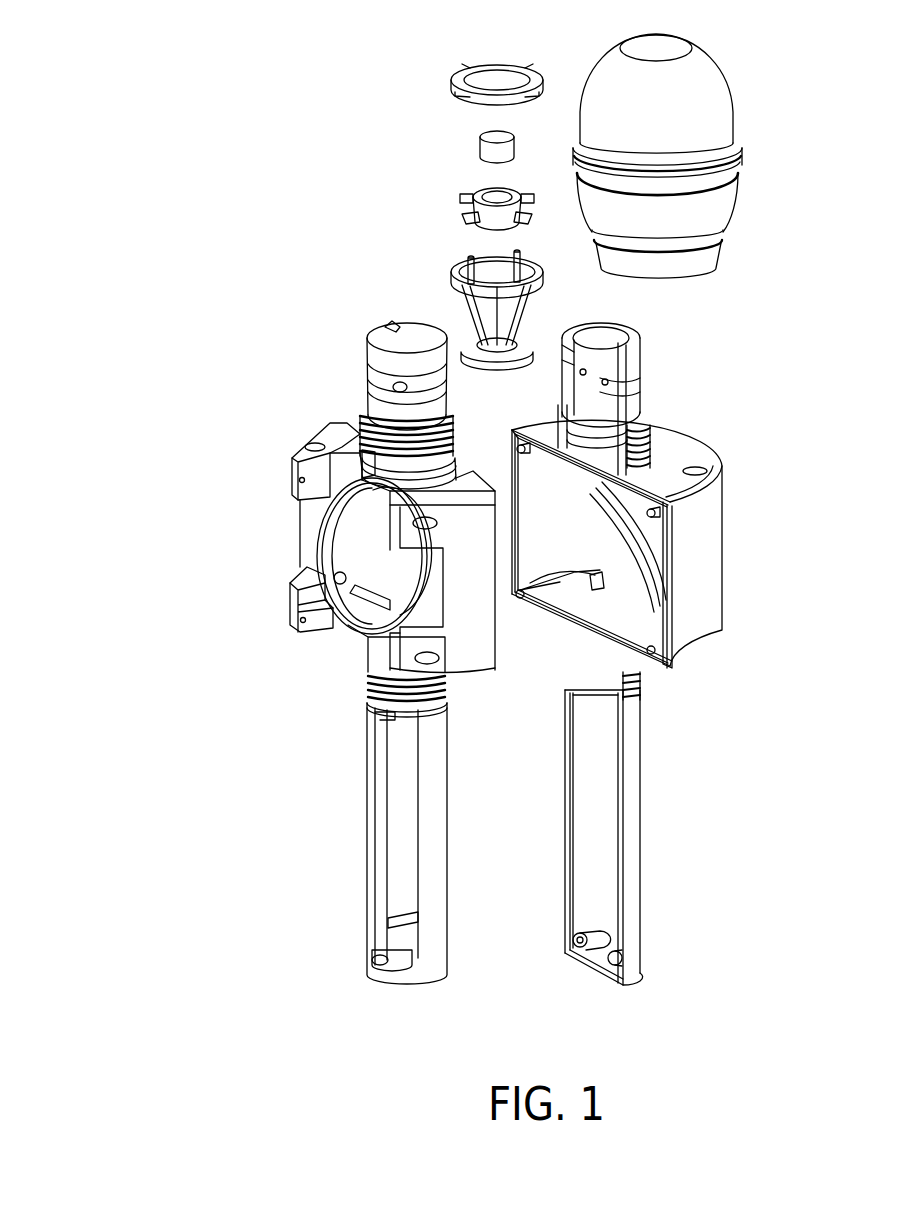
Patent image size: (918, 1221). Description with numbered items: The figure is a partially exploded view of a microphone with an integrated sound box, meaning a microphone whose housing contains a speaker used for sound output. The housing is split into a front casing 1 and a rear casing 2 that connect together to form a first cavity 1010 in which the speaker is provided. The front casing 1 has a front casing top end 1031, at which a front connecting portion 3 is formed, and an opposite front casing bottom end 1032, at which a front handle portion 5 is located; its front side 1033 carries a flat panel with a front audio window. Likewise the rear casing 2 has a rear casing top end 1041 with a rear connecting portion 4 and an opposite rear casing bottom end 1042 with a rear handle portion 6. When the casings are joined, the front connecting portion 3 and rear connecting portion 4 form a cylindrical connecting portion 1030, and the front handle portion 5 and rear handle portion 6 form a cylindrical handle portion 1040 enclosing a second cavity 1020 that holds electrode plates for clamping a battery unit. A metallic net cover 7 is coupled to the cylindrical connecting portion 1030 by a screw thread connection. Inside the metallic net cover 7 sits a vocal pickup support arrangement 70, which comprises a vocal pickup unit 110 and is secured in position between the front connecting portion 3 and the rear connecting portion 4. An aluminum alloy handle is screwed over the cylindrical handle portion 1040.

The front casing 1 is at (321, 565).
The rear casing 2 is at (676, 553).
The front connecting portion 3 is at (385, 372).
The rear connecting portion 4 is at (632, 373).
The front handle portion 5 is at (372, 870).
The rear handle portion 6 is at (640, 853).
The metallic net cover 7 is at (693, 82).
The vocal pickup support arrangement 70 is at (440, 250).
The vocal pickup unit 110 is at (481, 150).
The first cavity 1010 is at (440, 705).
The second cavity 1020 is at (598, 905).
The cylindrical connecting portion 1030 is at (658, 379).
The front casing top end 1031 is at (342, 418).
The front casing bottom end 1032 is at (330, 628).
The front side 1033 is at (305, 550).
The cylindrical handle portion 1040 is at (648, 912).
The rear casing top end 1041 is at (680, 428).
The rear casing bottom end 1042 is at (650, 676).